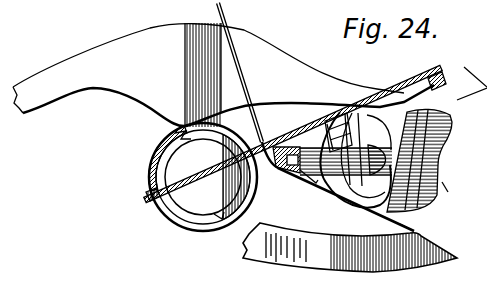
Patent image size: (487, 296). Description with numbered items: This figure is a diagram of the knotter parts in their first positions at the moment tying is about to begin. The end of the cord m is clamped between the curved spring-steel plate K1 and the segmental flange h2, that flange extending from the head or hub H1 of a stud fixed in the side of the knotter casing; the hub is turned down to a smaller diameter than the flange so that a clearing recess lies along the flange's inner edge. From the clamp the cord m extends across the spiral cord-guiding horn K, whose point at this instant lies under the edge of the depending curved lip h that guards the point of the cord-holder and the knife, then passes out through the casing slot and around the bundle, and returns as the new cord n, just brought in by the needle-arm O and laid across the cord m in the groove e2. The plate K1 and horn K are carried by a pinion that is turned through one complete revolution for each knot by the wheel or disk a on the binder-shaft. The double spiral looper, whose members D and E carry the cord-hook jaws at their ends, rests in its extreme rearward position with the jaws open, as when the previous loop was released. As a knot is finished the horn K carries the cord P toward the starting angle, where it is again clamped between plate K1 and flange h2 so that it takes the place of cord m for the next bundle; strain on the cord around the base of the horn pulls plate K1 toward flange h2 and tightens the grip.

The depending curved lip h is at (223, 75).
The new cord n is at (315, 115).
The spiral cord-guiding horn K is at (203, 171).
The curved clamping-plate K1 is at (152, 163).
The segmental flange h2 is at (203, 177).
The head of stud H1 is at (224, 177).
The cord m is at (150, 198).
The wheel or disk on binder-shaft a is at (437, 87).
The spiral looper member D is at (338, 132).
The spiral looper member E is at (346, 160).
The groove e2 is at (298, 168).
The cord P is at (414, 223).
The needle-arm O is at (407, 270).